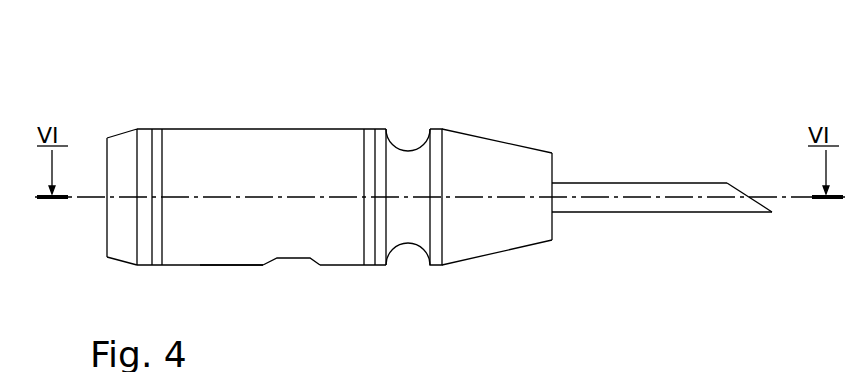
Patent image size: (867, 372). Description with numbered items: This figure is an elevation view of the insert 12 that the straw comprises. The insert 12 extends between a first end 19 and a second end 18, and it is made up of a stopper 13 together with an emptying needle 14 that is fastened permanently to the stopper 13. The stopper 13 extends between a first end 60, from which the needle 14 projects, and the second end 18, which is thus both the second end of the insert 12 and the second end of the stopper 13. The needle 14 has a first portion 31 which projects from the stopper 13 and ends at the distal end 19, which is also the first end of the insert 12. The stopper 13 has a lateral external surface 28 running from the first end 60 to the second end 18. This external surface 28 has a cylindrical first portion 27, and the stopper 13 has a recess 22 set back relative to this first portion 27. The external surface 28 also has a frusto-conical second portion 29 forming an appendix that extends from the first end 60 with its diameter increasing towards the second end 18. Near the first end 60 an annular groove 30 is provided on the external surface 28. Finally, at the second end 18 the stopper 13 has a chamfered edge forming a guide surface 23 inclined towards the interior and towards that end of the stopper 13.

The insert 12 is at (565, 85).
The stopper 13 is at (263, 98).
The emptying needle 14 is at (655, 161).
The second end 18 is at (107, 150).
The first end 19 is at (772, 212).
The recess 22 is at (303, 283).
The guide surface 23 is at (120, 264).
The cylindrical first portion 27 is at (229, 277).
The lateral external surface 28 is at (272, 182).
The frusto-conical second portion 29 is at (511, 263).
The annular groove 30 is at (405, 106).
The first portion 31 is at (665, 213).
The first end 60 is at (553, 170).